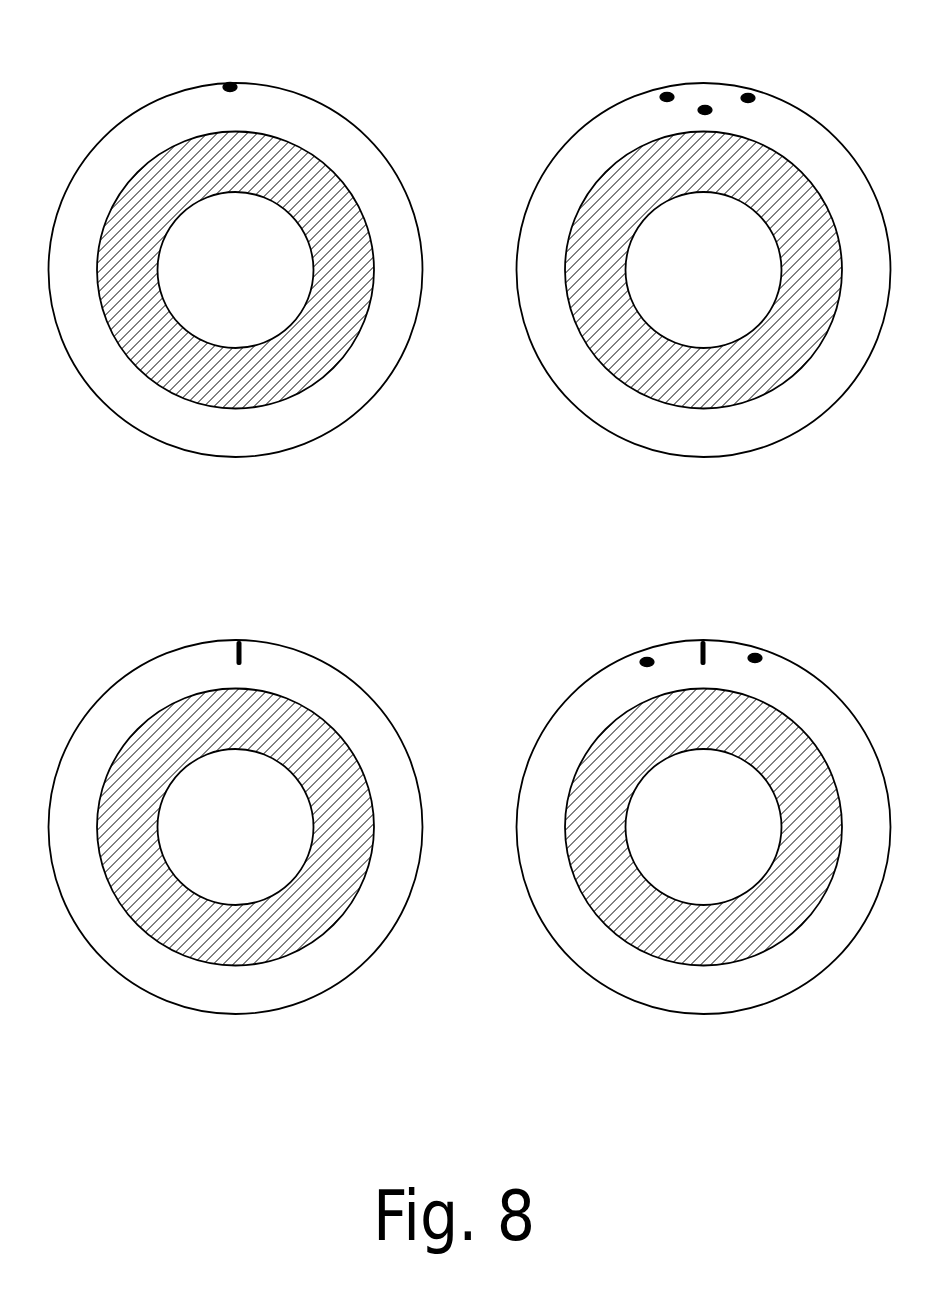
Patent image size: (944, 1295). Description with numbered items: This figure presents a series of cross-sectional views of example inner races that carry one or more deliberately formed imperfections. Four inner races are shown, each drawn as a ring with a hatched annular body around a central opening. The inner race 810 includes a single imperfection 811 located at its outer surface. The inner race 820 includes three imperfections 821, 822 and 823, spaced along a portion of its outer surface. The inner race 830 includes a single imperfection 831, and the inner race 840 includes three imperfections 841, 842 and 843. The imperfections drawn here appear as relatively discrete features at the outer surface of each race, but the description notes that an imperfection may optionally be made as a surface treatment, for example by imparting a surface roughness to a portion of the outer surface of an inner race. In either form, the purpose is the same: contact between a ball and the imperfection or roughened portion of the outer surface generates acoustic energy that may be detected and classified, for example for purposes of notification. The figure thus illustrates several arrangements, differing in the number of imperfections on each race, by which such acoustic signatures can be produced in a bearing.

The inner race 810 is at (223, 507).
The imperfection 811 is at (230, 84).
The inner race 820 is at (686, 509).
The imperfection 821 is at (705, 106).
The imperfection 822 is at (667, 93).
The imperfection 823 is at (748, 93).
The inner race 830 is at (222, 1071).
The imperfection 831 is at (239, 638).
The inner race 840 is at (686, 1071).
The imperfection 841 is at (703, 638).
The imperfection 842 is at (647, 657).
The imperfection 843 is at (755, 653).